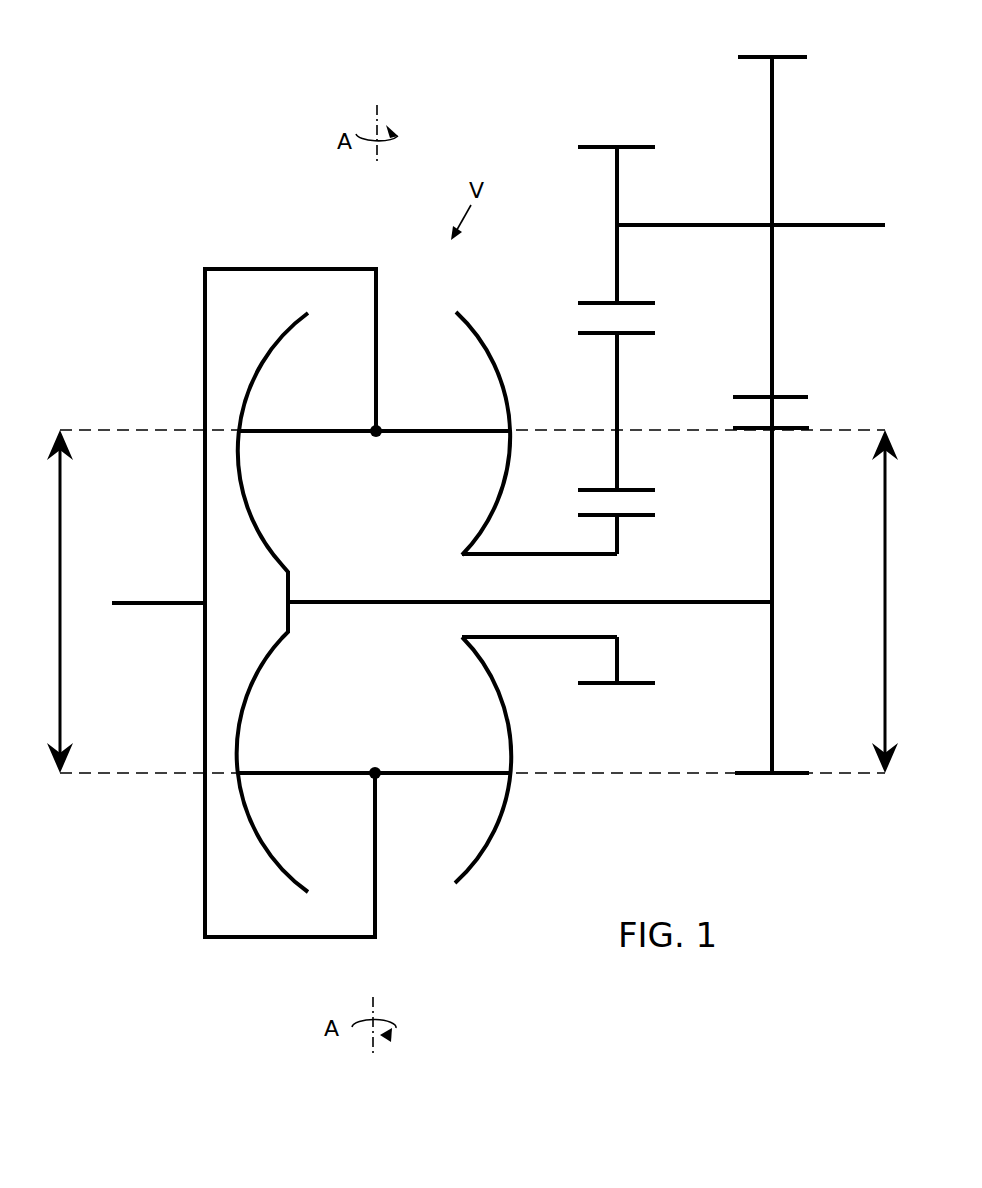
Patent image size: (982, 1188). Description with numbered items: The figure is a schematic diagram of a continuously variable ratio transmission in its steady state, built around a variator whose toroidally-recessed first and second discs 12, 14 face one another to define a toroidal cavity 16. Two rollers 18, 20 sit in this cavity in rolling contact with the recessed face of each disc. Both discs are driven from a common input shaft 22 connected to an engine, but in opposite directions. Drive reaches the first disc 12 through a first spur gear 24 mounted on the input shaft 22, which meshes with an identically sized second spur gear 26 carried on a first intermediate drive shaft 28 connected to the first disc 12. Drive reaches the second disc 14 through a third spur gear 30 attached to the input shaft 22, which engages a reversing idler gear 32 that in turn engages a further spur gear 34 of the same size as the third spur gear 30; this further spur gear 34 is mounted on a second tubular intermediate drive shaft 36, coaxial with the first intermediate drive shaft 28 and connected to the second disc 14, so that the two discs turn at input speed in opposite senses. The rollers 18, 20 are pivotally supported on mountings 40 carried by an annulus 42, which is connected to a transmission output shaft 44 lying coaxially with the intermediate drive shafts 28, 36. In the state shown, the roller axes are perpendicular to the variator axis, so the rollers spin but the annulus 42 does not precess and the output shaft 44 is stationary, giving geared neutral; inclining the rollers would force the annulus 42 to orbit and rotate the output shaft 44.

The first disc 12 is at (280, 335).
The second disc 14 is at (490, 358).
The toroidal cavity 16 is at (387, 497).
The roller 18 is at (445, 435).
The roller 20 is at (428, 770).
The input shaft 22 is at (810, 222).
The first spur gear 24 is at (797, 395).
The second spur gear 26 is at (790, 431).
The first intermediate drive shaft 28 is at (685, 598).
The third spur gear 30 is at (588, 146).
The reversing idler gear 32 is at (596, 336).
The further spur gear 34 is at (653, 514).
The second tubular intermediate drive shaft 36 is at (533, 553).
The mounting 40 is at (384, 426).
The annulus 42 is at (281, 268).
The transmission output shaft 44 is at (147, 600).